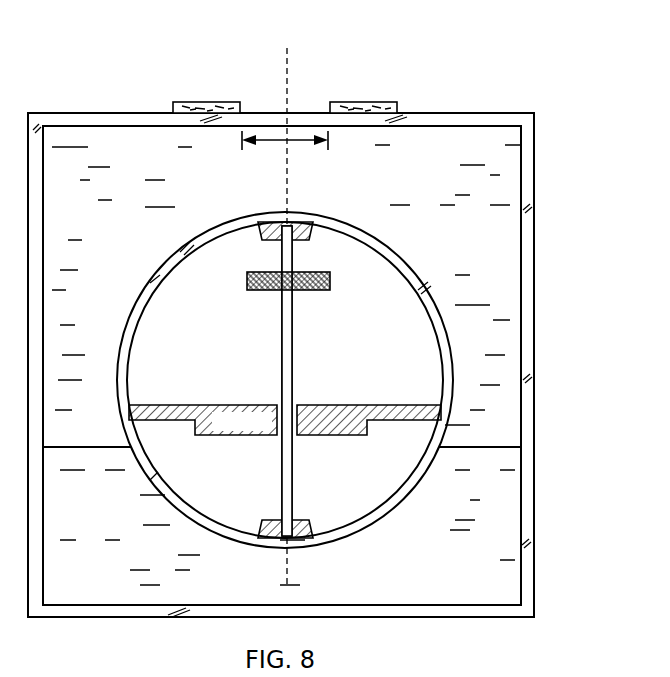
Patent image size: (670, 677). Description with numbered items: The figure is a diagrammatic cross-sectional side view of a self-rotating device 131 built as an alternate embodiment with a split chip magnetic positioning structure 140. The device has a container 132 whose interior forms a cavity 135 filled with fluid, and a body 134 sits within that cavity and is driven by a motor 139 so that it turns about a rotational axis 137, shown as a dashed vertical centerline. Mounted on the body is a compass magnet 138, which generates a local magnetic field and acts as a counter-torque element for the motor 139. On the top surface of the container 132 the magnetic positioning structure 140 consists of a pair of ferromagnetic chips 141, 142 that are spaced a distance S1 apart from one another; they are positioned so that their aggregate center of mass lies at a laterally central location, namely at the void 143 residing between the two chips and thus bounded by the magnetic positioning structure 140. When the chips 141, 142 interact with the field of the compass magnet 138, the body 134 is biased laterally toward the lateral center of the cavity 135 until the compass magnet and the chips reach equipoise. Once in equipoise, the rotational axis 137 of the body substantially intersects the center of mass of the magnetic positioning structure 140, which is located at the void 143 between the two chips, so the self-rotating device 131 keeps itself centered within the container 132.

The self-rotating device 131 is at (563, 104).
The container 132 is at (534, 172).
The body 134 is at (405, 260).
The cavity 135 is at (503, 493).
The rotational axis 137 is at (287, 172).
The compass magnet 138 is at (305, 292).
The motor 139 is at (350, 405).
The magnetic positioning structure 140 is at (138, 87).
The ferromagnetic chip 141 is at (204, 102).
The ferromagnetic chip 142 is at (386, 102).
The void 143 is at (303, 105).
The distance S1 is at (302, 144).